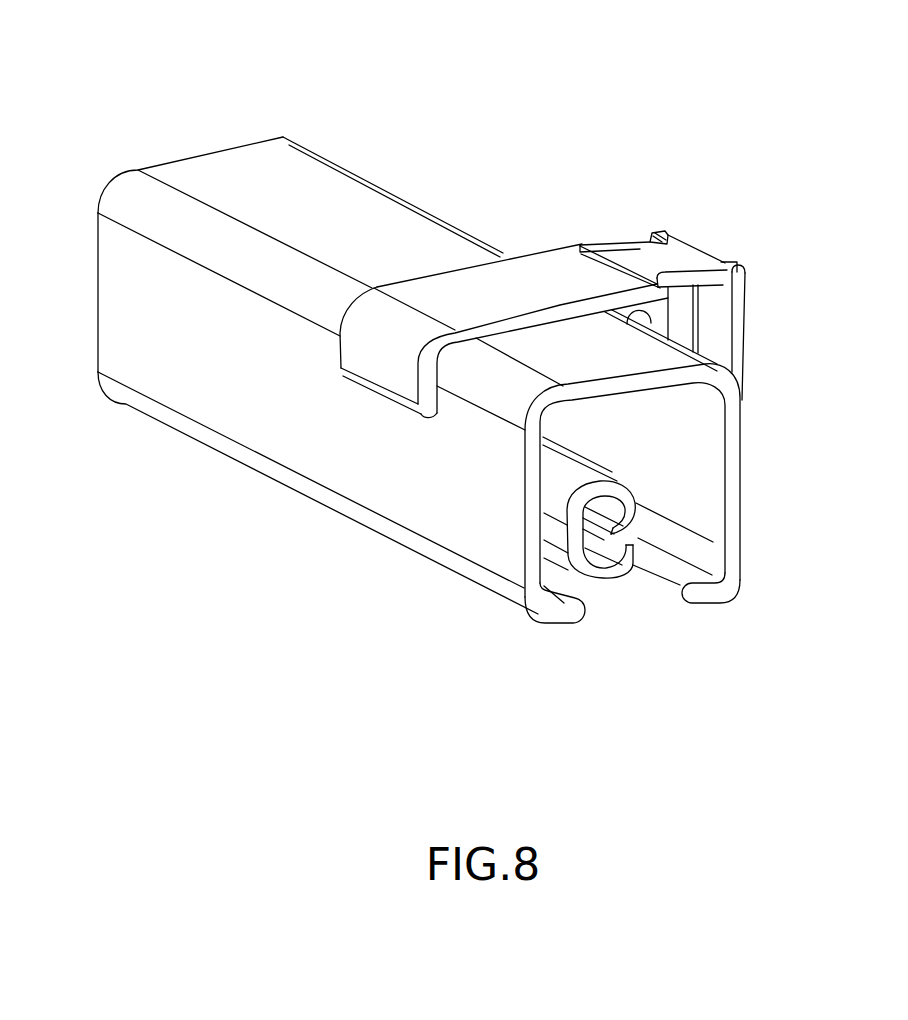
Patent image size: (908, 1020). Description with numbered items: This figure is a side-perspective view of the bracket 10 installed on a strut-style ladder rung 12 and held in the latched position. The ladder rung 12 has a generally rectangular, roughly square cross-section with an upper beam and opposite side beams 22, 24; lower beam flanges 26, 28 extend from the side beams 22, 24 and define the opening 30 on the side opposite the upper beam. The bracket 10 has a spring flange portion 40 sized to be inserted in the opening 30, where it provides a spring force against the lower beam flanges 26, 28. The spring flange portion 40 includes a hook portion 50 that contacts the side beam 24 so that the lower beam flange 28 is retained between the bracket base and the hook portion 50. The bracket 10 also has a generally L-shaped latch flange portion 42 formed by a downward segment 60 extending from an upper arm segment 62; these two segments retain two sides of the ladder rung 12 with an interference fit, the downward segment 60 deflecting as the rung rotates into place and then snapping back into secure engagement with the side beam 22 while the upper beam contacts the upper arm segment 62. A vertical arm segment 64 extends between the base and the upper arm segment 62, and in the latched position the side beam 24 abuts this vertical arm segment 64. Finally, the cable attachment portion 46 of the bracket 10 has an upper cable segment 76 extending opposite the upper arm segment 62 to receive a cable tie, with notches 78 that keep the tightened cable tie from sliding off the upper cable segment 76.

The bracket 10 is at (563, 252).
The strut-style ladder rung 12 is at (304, 165).
The side beam 22 is at (462, 493).
The side beam 24 is at (733, 520).
The lower beam flange 26 is at (570, 612).
The lower beam flange 28 is at (693, 593).
The opening 30 is at (577, 586).
The spring flange portion 40 is at (620, 491).
The latch flange portion 42 is at (537, 282).
The cable attachment portion 46 is at (737, 270).
The hook portion 50 is at (627, 543).
The downward segment 60 is at (394, 381).
The upper arm segment 62 is at (490, 282).
The vertical arm segment 64 is at (662, 325).
The upper cable segment 76 is at (670, 254).
The notches 78 is at (634, 245).